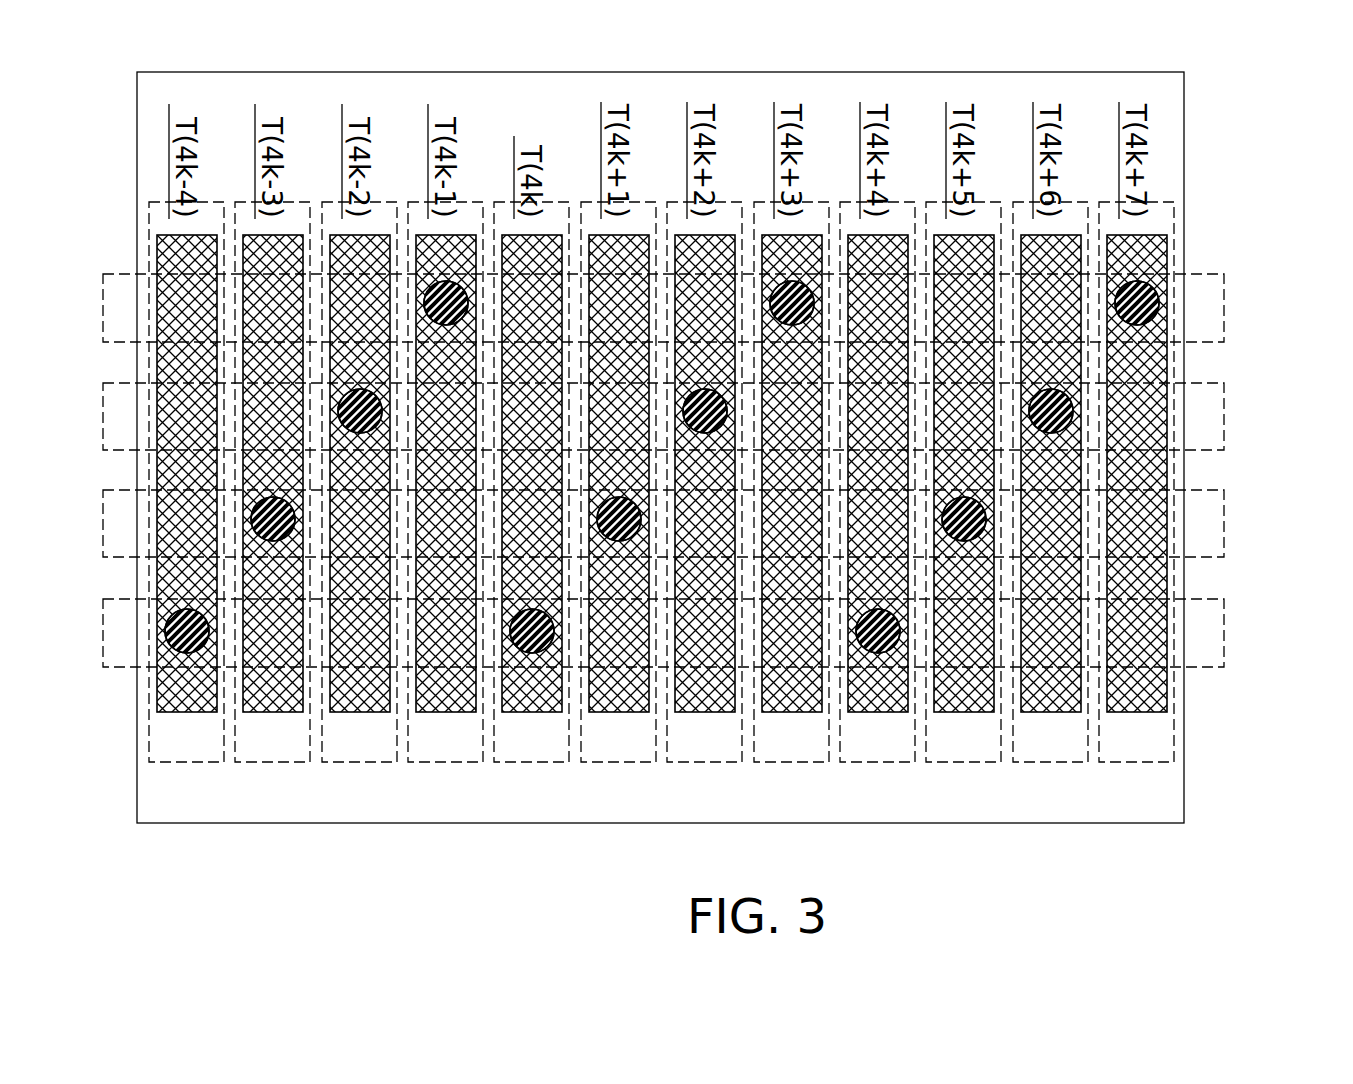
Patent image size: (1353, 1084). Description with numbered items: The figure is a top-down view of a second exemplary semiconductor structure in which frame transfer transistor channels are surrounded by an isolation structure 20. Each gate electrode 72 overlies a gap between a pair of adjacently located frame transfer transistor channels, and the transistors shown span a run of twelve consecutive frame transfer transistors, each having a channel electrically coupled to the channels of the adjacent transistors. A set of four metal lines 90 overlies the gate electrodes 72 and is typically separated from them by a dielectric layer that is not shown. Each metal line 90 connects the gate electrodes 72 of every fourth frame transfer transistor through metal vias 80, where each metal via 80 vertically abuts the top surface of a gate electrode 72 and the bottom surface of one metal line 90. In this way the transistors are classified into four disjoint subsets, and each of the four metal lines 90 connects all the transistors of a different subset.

The isolation structure 20 is at (584, 114).
The gate electrode 72 is at (456, 713).
The metal via 80 is at (444, 324).
The metal line 90 is at (1224, 524).